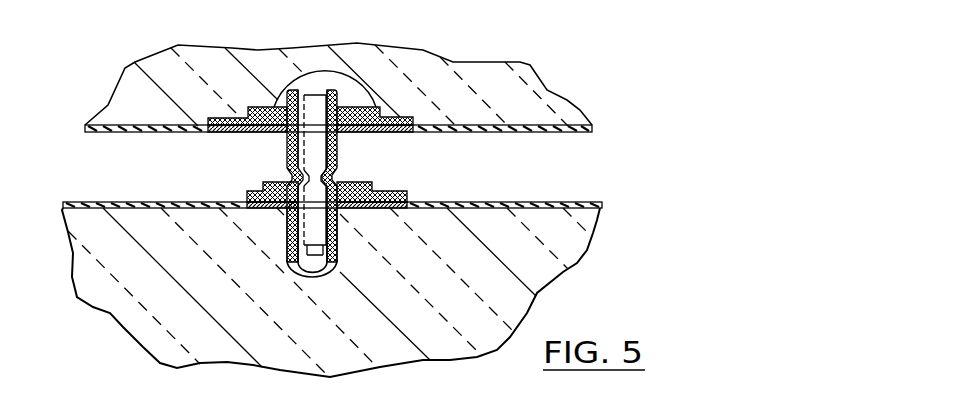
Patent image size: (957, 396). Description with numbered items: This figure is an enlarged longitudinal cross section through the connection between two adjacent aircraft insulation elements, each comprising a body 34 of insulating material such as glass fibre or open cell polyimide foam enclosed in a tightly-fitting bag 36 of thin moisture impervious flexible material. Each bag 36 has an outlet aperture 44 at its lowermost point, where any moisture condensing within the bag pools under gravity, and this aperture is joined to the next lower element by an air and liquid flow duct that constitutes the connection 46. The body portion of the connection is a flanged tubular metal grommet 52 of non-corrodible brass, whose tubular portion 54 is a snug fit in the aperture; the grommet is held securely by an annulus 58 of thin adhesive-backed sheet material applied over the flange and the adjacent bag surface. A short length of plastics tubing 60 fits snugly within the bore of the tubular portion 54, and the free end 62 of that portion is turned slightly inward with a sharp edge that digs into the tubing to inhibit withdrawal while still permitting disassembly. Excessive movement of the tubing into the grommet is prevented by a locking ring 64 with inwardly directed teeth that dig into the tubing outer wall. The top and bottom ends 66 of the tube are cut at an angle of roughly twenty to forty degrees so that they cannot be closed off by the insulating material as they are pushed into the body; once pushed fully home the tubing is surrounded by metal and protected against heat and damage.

The body 34 is at (110, 108).
The bag 36 is at (113, 132).
The outlet aperture 44 is at (339, 79).
The connection 46 is at (407, 148).
The flanged tubular metal grommet 52 is at (378, 104).
The tubular portion 54 is at (310, 189).
The annulus 58 is at (218, 201).
The tubing 60 is at (328, 144).
The free end 62 is at (340, 276).
The locking ring 64 is at (282, 104).
The top and bottom ends 66 is at (318, 98).